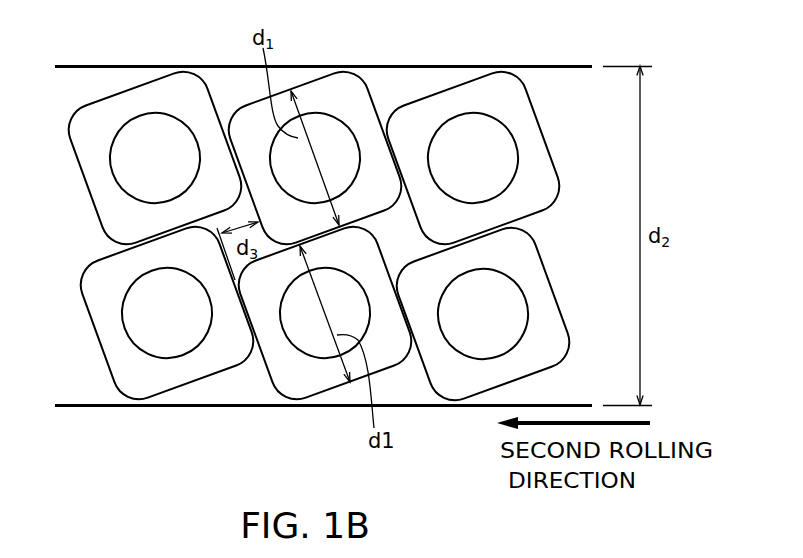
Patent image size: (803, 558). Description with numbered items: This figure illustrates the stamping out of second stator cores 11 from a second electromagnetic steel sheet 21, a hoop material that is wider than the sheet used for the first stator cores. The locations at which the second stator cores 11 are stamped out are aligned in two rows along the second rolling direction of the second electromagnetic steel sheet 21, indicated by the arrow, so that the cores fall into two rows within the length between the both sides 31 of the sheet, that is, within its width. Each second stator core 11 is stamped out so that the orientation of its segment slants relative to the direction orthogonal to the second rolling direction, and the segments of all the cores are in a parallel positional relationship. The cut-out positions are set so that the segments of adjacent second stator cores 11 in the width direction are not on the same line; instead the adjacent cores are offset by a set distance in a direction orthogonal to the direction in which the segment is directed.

The second stator core 11 is at (163, 86).
The second electromagnetic steel sheet 21 is at (550, 86).
The both sides of the second electromagnetic steel sheet 31 is at (77, 65).